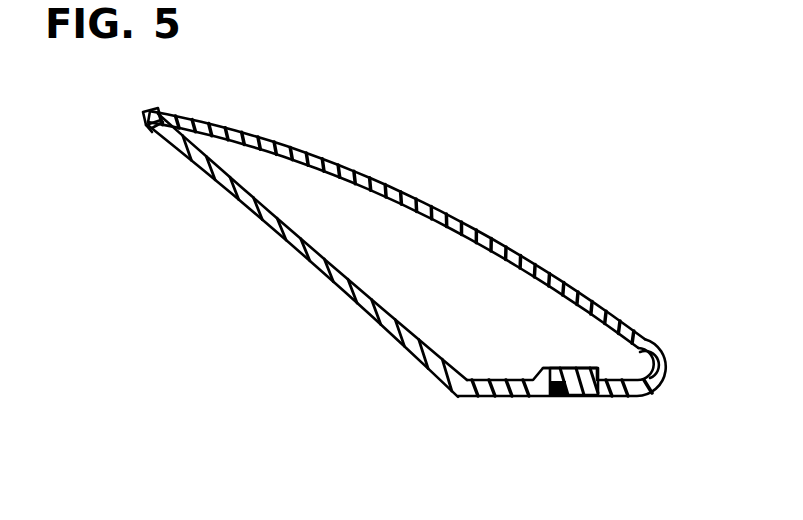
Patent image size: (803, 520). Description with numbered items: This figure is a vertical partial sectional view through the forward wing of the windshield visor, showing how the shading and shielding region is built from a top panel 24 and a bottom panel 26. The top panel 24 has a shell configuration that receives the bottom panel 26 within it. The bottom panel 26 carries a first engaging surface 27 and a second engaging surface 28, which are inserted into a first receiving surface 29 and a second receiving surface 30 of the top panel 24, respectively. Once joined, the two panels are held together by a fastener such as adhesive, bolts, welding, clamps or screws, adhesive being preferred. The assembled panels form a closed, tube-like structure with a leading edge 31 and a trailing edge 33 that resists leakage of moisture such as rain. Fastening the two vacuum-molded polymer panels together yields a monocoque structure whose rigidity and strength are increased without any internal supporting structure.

The top panel 24 is at (432, 208).
The bottom panel 26 is at (382, 330).
The first engaging surface 27 is at (577, 377).
The second engaging surface 28 is at (165, 130).
The first receiving surface 29 is at (567, 395).
The second receiving surface 30 is at (152, 125).
The leading edge 31 is at (668, 368).
The trailing edge 33 is at (147, 122).